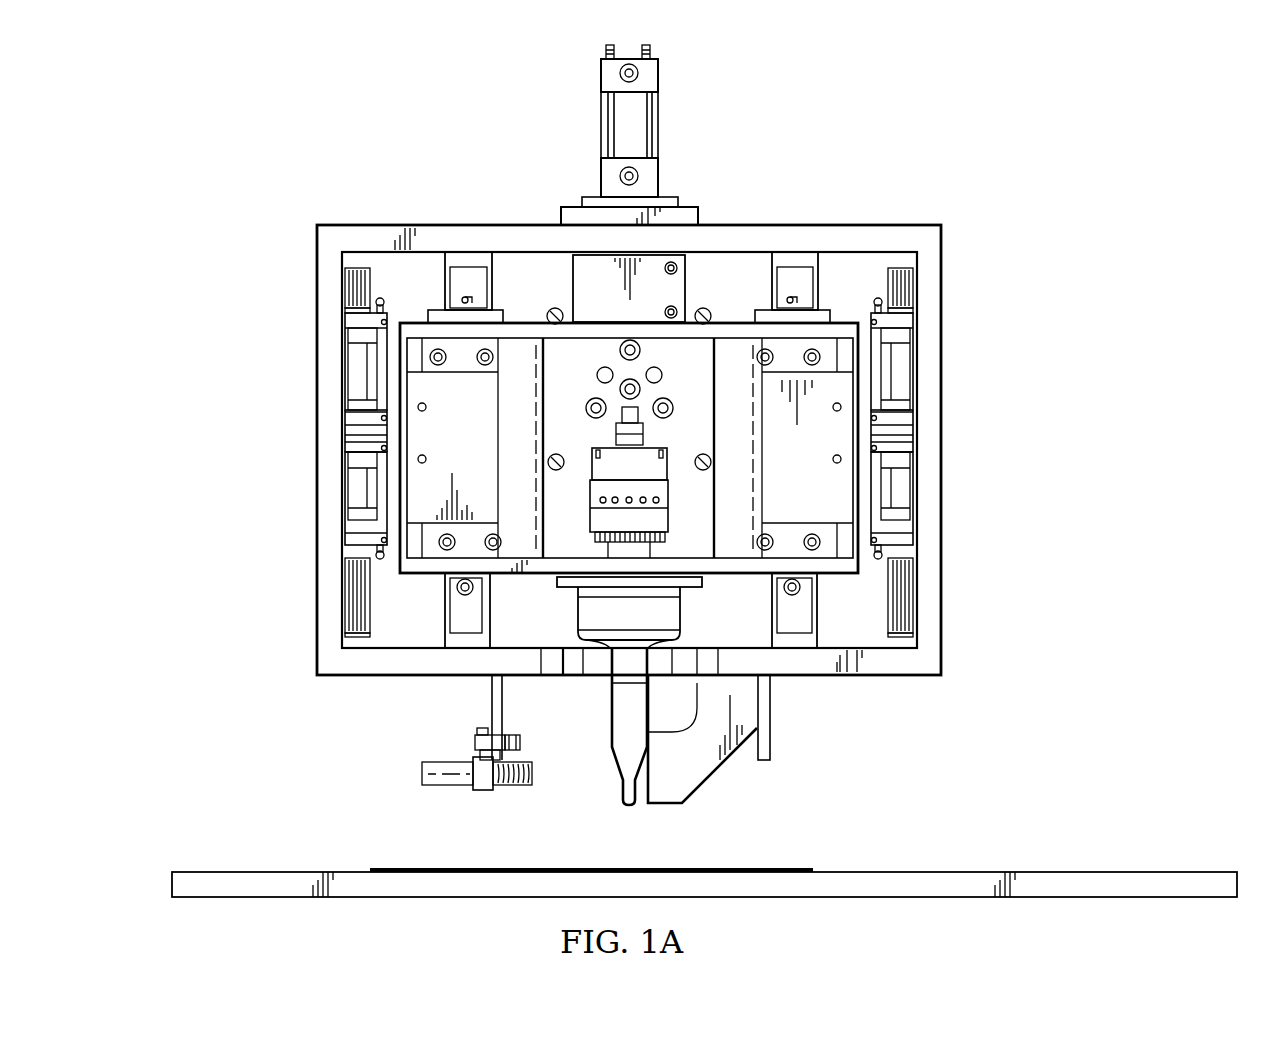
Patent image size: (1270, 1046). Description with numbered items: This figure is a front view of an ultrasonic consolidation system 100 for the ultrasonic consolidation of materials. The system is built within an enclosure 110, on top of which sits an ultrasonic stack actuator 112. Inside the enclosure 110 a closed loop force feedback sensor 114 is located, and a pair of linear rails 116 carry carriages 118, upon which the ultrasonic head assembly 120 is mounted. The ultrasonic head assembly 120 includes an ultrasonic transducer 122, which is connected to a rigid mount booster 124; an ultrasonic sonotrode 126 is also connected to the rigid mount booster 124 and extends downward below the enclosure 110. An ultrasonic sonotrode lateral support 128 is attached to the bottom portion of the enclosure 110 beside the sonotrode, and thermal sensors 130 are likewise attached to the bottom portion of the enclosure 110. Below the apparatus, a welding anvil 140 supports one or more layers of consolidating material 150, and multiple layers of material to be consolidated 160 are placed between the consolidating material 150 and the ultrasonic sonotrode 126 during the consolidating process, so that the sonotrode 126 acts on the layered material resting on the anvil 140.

The ultrasonic consolidation system 100 is at (553, 436).
The enclosure 110 is at (340, 455).
The ultrasonic stack actuator 112 is at (601, 175).
The closed loop force feedback sensor 114 is at (573, 290).
The linear rails 116 is at (350, 595).
The carriages 118 is at (350, 512).
The ultrasonic head assembly 120 is at (731, 318).
The ultrasonic transducer 122 is at (600, 448).
The rigid mount booster 124 is at (680, 608).
The ultrasonic sonotrode 126 is at (623, 803).
The ultrasonic sonotrode lateral support 128 is at (704, 783).
The thermal sensors 130 is at (445, 762).
The welding anvil 140 is at (269, 900).
The consolidating material 150 is at (387, 864).
The layers of material to be consolidated 160 is at (519, 864).